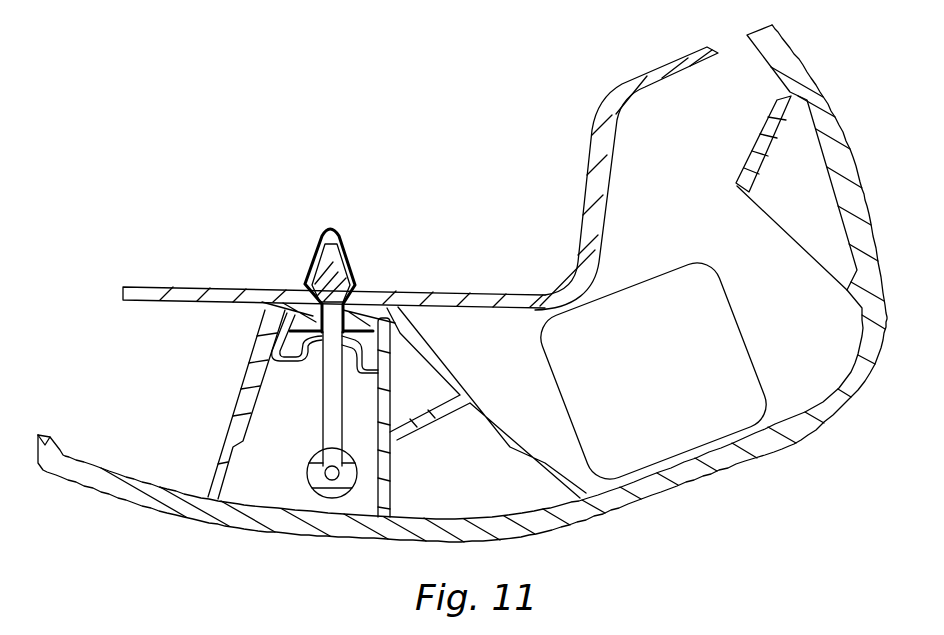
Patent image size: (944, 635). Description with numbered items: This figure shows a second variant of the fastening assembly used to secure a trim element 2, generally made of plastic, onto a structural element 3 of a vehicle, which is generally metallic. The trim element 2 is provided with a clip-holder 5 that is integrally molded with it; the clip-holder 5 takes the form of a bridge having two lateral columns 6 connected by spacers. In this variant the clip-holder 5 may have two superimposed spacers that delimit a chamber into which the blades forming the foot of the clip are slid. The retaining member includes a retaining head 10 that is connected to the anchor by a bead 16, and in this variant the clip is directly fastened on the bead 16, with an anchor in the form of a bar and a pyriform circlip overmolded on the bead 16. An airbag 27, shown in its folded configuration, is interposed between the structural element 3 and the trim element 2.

The trim element 2 is at (640, 489).
The structural element 3 is at (593, 190).
The clip-holder 5 is at (245, 398).
The lateral columns 6 is at (255, 351).
The retaining head 10 is at (362, 226).
The bead 16 is at (325, 430).
The airbag 27 is at (678, 391).